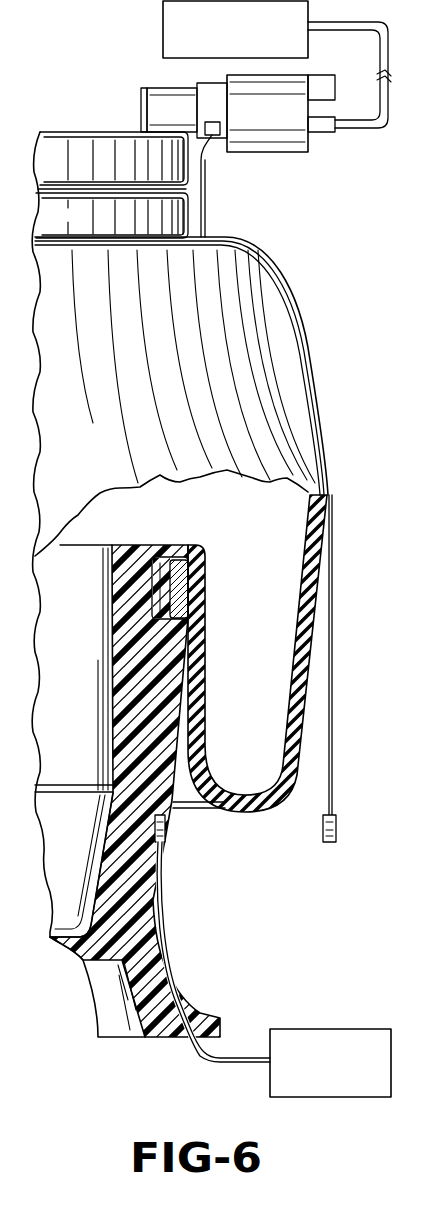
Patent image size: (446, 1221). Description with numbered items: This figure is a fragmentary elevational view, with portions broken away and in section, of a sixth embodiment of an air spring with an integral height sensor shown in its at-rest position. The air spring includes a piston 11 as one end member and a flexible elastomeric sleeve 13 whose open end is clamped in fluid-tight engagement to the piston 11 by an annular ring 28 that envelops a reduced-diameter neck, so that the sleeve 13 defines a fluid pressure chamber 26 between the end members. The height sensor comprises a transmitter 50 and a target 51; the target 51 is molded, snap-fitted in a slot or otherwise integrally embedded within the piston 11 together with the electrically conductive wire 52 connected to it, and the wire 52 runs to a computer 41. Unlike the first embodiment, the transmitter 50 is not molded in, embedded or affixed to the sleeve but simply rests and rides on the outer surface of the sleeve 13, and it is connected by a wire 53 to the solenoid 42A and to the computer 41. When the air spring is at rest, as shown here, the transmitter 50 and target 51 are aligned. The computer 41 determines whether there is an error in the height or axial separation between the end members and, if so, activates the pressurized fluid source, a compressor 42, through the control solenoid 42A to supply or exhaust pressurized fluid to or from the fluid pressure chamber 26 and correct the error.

The piston 11 is at (197, 1008).
The flexible elastomeric sleeve 13 is at (312, 684).
The fluid pressure chamber 26 is at (273, 518).
The annular ring 28 is at (181, 580).
The computer 41 is at (336, 1097).
The compressor 42 is at (163, 30).
The solenoid 42A is at (262, 152).
The transmitter 50 is at (336, 826).
The target 51 is at (167, 828).
The wire 52 is at (216, 1068).
The wire 53 is at (317, 396).